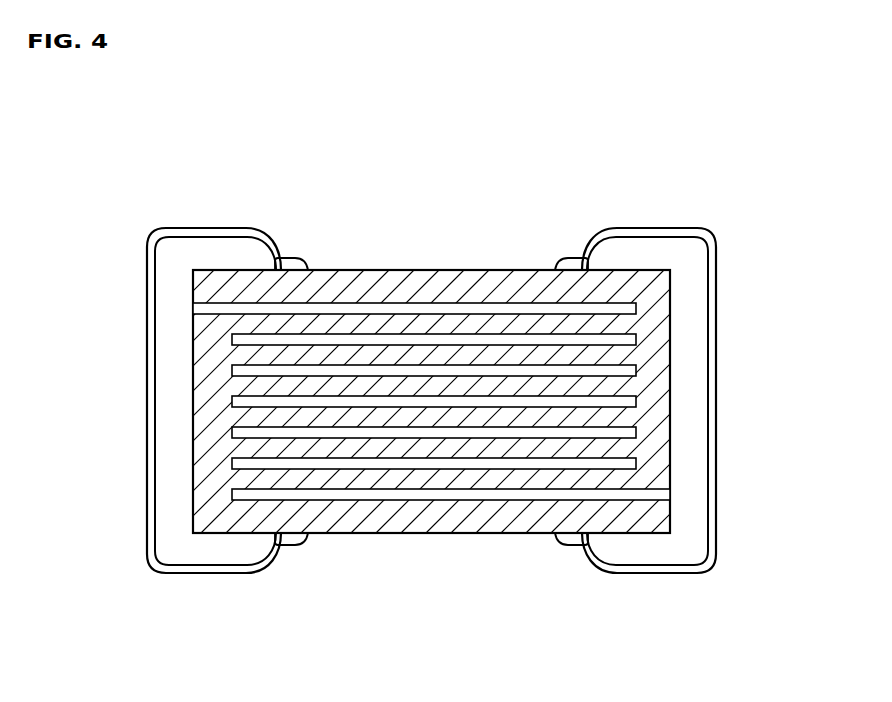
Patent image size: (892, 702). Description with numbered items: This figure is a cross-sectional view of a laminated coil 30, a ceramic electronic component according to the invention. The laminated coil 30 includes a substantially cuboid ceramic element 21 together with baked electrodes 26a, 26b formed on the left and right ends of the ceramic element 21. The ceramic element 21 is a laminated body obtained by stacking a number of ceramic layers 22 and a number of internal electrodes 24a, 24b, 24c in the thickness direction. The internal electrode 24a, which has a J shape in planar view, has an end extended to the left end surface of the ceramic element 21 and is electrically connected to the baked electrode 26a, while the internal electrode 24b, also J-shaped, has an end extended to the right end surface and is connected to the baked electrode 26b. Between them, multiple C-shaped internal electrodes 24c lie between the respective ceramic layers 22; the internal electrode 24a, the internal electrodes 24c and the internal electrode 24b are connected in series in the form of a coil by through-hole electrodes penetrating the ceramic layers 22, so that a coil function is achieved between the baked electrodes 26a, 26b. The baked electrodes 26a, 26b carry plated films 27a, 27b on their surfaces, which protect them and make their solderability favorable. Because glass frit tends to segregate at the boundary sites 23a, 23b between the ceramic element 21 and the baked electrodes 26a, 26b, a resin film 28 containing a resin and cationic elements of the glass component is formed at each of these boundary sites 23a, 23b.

The laminated coil 30 is at (172, 148).
The ceramic element 21 is at (373, 282).
The ceramic layers 22 is at (243, 292).
The internal electrode 24a is at (243, 312).
The internal electrode 24b is at (466, 501).
The internal electrodes 24c is at (550, 370).
The boundary site 23a is at (173, 403).
The boundary site 23b is at (687, 392).
The baked electrode 26a is at (172, 272).
The baked electrode 26b is at (693, 268).
The plated film 27a is at (158, 236).
The plated film 27b is at (704, 232).
The resin film 28 is at (288, 259).